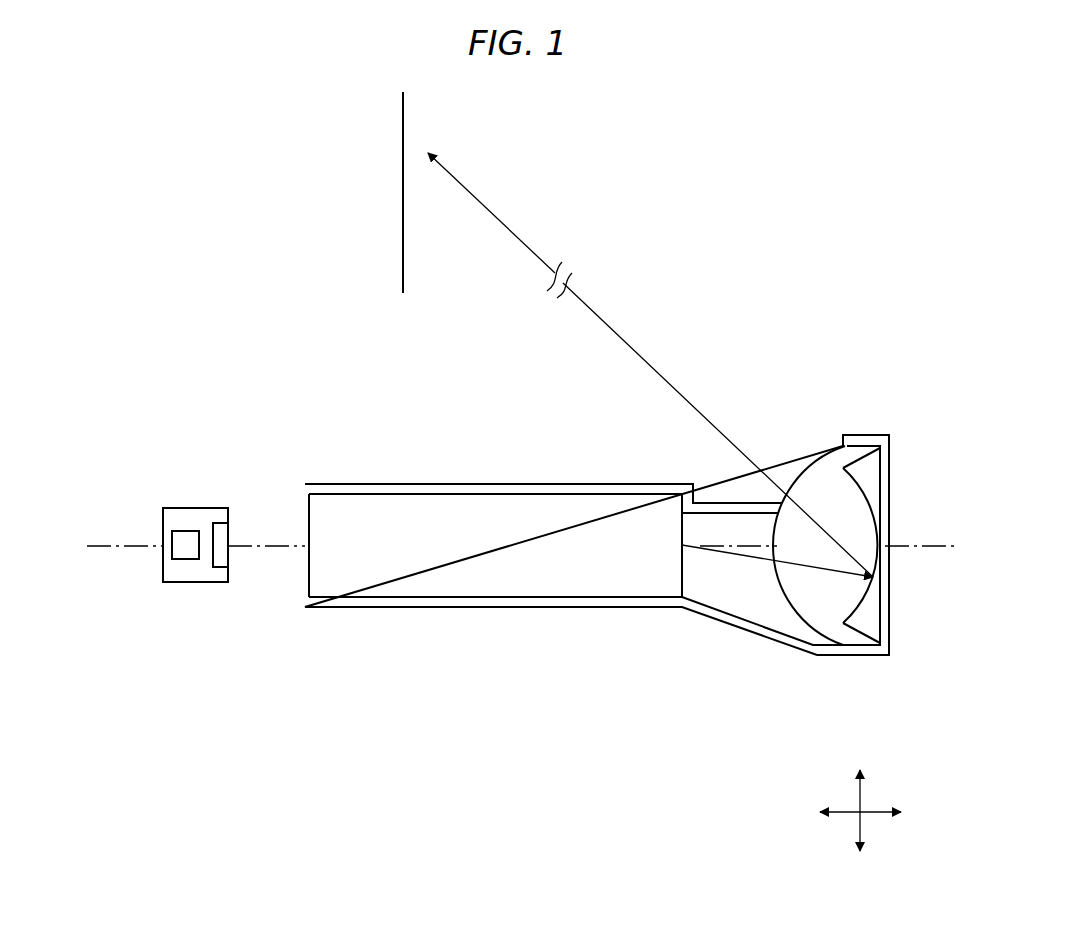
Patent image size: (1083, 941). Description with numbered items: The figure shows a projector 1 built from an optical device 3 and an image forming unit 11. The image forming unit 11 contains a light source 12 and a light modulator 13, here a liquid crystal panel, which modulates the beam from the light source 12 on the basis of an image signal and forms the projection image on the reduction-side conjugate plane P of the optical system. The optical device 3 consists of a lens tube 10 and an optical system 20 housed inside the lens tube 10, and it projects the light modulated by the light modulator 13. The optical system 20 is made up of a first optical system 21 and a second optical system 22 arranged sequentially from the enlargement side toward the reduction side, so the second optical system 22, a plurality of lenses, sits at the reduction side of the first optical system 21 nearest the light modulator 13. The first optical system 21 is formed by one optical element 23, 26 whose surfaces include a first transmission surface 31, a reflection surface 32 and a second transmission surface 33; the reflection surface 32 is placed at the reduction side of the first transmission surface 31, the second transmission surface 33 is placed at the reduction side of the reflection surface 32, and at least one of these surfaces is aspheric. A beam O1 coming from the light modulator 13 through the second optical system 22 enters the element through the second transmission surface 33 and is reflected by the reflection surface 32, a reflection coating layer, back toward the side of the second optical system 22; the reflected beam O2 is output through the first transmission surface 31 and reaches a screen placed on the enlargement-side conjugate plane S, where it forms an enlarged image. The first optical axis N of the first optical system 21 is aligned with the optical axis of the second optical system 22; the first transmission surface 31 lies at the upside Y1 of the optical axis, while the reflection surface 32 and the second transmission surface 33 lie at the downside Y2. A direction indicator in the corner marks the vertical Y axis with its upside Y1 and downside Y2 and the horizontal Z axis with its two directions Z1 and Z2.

The projector 1 is at (846, 316).
The optical device 3 is at (490, 630).
The lens tube 10 is at (487, 483).
The image forming unit 11 is at (168, 478).
The light source 12 is at (186, 552).
The light modulator 13 is at (224, 527).
The optical system 20 is at (786, 713).
The first optical system 21 is at (788, 624).
The second optical system 22 is at (548, 580).
The optical element 23 is at (848, 503).
The reflective portion 26 is at (840, 545).
The first transmission surface 31 is at (798, 478).
The reflection surface 32 is at (858, 607).
The second transmission surface 33 is at (780, 590).
The first optical axis N is at (103, 545).
The reduction-side conjugate plane P is at (229, 552).
The enlargement-side conjugate plane S is at (404, 253).
The beam O1 is at (733, 554).
The beam O2 is at (675, 387).
The Y direction Y is at (861, 797).
The Z direction Z is at (878, 815).
The upside Y1 is at (861, 775).
The downside Y2 is at (861, 851).
The Z1 direction Z1 is at (902, 812).
The Z2 direction Z2 is at (822, 812).